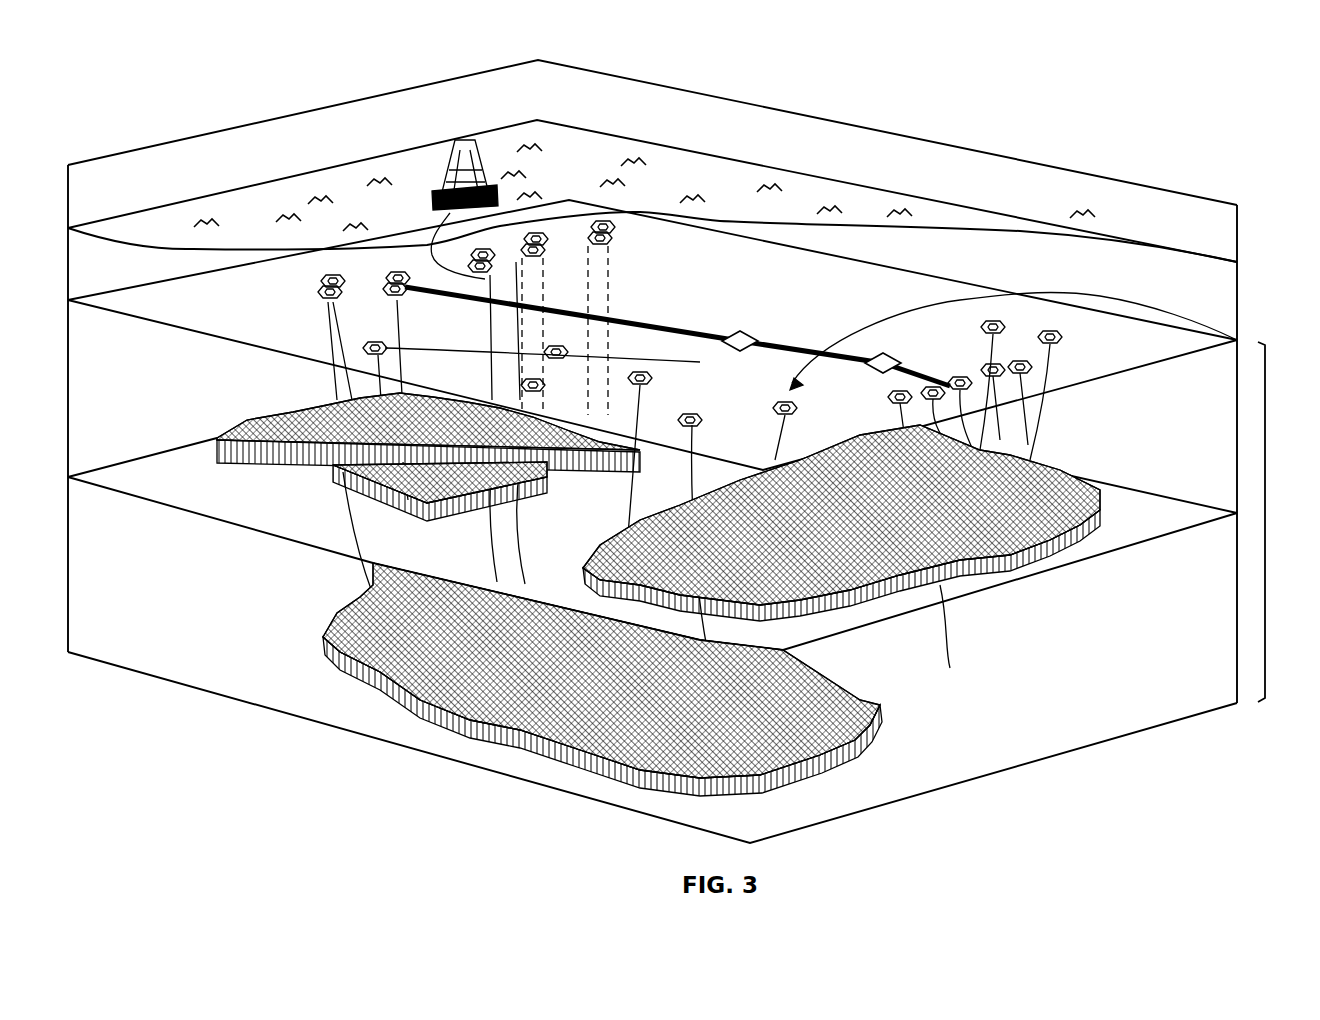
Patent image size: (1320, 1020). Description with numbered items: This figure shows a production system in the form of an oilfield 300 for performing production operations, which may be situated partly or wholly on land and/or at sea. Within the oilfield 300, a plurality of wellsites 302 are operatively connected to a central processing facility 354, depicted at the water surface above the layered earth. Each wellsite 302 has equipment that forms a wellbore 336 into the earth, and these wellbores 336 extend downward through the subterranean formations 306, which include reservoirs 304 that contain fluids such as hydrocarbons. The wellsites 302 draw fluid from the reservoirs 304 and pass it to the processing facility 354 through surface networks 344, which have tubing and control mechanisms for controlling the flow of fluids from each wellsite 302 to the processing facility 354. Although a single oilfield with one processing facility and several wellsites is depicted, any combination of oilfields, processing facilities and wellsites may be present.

The oilfield 300 is at (117, 70).
The wellsite 302 is at (1053, 318).
The reservoir 304 is at (874, 713).
The subterranean formation 306 is at (1265, 500).
The wellbore 336 is at (1053, 424).
The surface network 344 is at (370, 309).
The central processing facility 354 is at (447, 163).